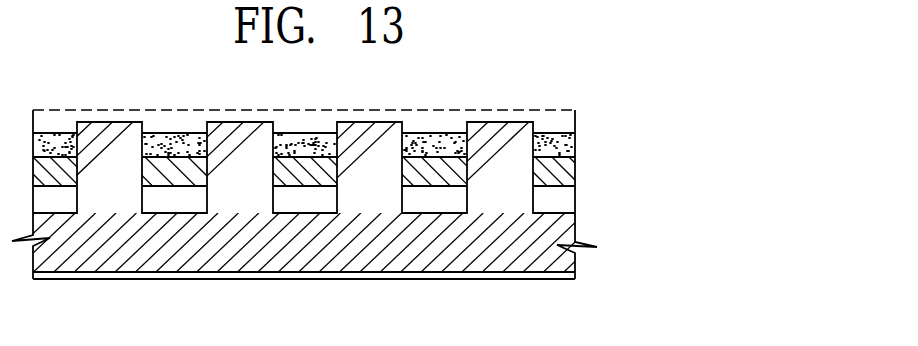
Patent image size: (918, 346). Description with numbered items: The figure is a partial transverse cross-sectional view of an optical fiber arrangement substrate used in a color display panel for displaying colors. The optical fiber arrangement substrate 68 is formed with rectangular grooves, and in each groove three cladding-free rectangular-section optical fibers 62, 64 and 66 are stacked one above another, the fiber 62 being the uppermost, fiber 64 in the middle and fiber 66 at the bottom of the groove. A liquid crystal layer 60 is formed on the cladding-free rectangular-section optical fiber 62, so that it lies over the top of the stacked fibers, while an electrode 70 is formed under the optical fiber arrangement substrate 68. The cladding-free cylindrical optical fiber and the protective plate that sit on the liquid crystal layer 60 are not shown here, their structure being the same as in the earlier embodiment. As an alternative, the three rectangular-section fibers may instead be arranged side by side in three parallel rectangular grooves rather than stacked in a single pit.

The liquid crystal layer 60 is at (560, 131).
The cladding-free rectangular-section optical fiber 62 is at (562, 153).
The cladding-free rectangular-section optical fiber 64 is at (562, 178).
The cladding-free rectangular-section optical fiber 66 is at (562, 202).
The optical fiber arrangement substrate 68 is at (556, 238).
The electrode 70 is at (562, 278).